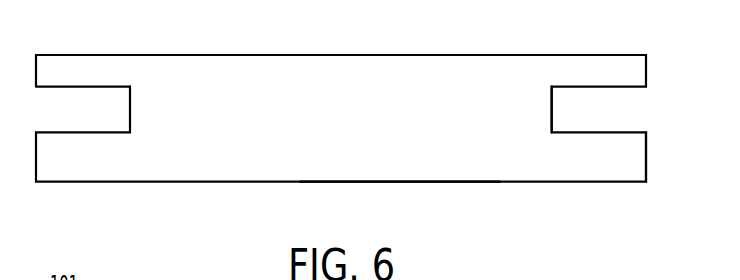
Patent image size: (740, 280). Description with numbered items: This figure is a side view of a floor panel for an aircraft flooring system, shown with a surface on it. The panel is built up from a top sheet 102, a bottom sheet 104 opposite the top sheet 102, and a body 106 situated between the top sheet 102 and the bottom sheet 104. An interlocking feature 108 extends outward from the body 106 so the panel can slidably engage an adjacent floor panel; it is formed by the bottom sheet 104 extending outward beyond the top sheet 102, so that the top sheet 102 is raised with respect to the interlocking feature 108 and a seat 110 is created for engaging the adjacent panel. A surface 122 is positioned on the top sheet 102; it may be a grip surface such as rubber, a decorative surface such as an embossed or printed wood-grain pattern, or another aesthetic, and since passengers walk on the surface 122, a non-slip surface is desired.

The top sheet 102 is at (462, 83).
The bottom sheet 104 is at (528, 182).
The body 106 is at (427, 160).
The interlocking feature 108 is at (627, 158).
The seat 110 is at (553, 130).
The surface 122 is at (573, 68).